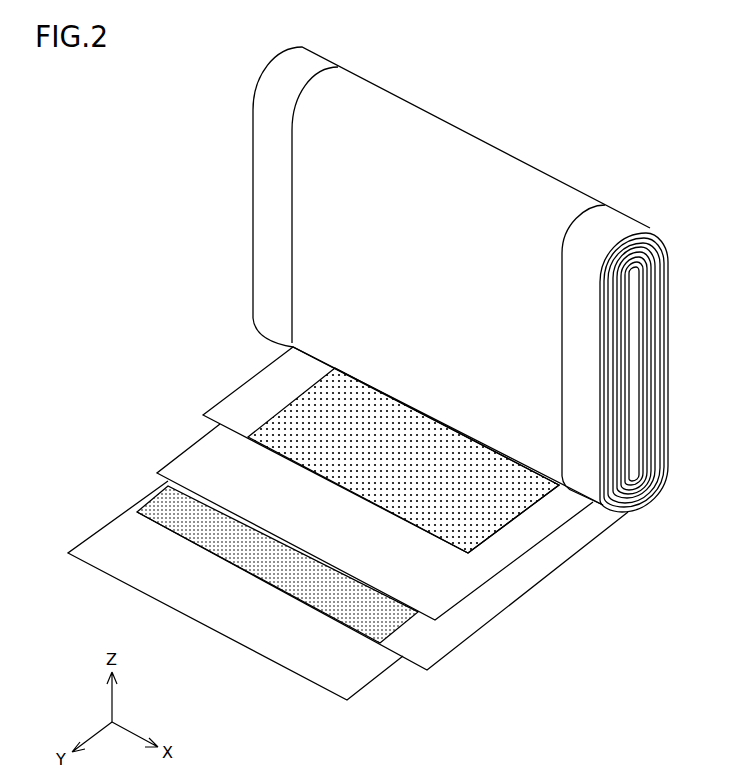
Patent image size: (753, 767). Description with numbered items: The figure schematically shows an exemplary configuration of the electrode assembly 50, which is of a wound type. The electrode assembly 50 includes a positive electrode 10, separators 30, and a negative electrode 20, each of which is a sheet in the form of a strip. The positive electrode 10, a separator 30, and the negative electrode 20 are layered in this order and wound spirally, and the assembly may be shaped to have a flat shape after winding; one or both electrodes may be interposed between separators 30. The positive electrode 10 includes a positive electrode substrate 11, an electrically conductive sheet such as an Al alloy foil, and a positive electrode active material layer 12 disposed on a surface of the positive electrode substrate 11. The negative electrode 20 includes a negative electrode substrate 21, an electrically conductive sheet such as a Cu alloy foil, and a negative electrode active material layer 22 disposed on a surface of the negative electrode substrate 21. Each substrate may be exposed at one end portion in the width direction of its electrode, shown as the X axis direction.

The positive electrode 10 is at (348, 438).
The positive electrode substrate 11 is at (283, 375).
The positive electrode active material layer 12 is at (297, 420).
The negative electrode 20 is at (382, 619).
The negative electrode substrate 21 is at (495, 597).
The negative electrode active material layer 22 is at (353, 608).
The separator 30 is at (121, 550).
The electrode assembly 50 is at (656, 167).